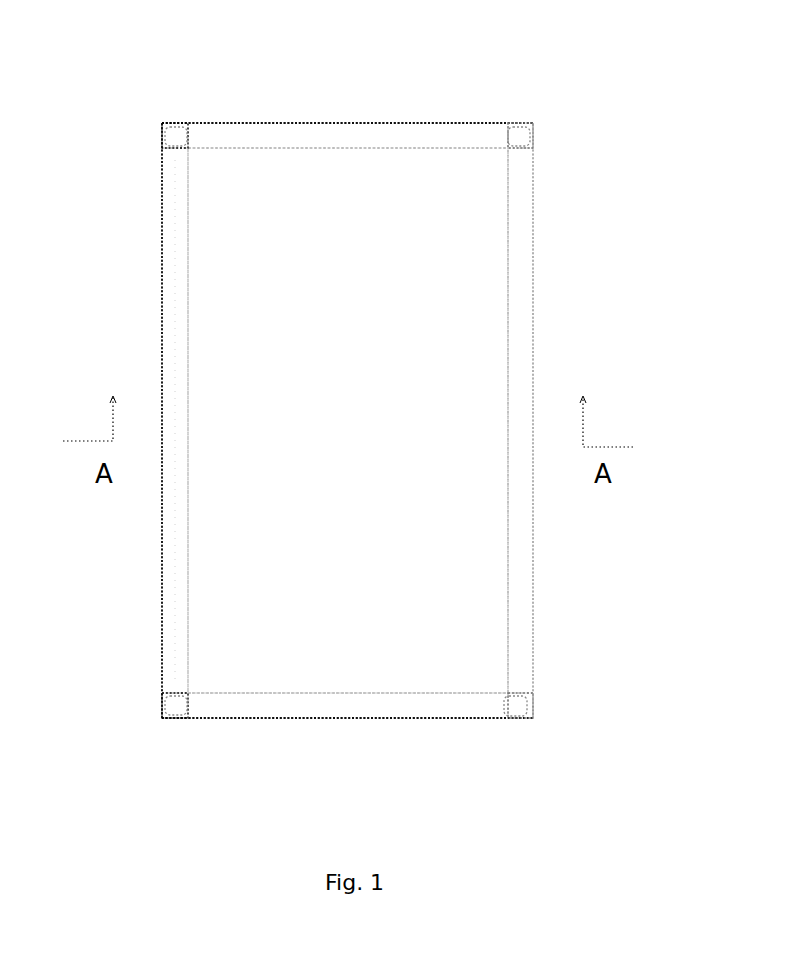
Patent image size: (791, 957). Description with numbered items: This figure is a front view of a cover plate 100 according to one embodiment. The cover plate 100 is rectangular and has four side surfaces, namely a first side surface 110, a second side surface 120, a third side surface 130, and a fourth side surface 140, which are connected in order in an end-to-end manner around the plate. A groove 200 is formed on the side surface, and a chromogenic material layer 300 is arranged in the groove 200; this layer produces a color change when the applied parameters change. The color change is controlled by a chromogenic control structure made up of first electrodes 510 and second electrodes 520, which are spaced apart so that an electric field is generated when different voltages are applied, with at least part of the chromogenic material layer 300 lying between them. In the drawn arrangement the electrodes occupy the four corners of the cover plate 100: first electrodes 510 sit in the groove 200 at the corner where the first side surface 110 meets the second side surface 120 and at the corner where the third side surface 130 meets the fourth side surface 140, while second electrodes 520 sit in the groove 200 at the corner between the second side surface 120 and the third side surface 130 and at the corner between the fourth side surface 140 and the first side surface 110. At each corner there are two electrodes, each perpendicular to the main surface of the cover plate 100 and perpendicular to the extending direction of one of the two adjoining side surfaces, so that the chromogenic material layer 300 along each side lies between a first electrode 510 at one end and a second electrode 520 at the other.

The cover plate 100 is at (396, 72).
The first side surface 110 is at (272, 123).
The second side surface 120 is at (535, 333).
The third side surface 130 is at (343, 720).
The fourth side surface 140 is at (163, 245).
The groove 200 is at (187, 348).
The chromogenic material layer 300 is at (172, 322).
The first electrode 510 is at (520, 125).
The second electrode 520 is at (193, 130).